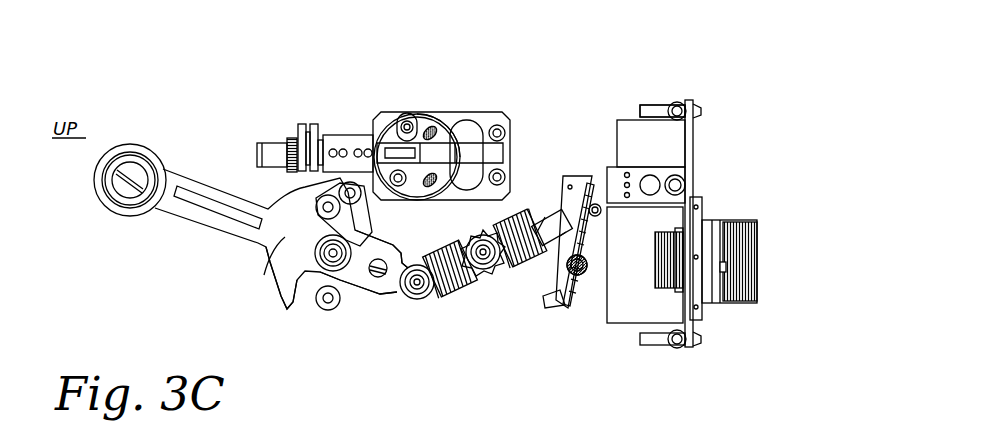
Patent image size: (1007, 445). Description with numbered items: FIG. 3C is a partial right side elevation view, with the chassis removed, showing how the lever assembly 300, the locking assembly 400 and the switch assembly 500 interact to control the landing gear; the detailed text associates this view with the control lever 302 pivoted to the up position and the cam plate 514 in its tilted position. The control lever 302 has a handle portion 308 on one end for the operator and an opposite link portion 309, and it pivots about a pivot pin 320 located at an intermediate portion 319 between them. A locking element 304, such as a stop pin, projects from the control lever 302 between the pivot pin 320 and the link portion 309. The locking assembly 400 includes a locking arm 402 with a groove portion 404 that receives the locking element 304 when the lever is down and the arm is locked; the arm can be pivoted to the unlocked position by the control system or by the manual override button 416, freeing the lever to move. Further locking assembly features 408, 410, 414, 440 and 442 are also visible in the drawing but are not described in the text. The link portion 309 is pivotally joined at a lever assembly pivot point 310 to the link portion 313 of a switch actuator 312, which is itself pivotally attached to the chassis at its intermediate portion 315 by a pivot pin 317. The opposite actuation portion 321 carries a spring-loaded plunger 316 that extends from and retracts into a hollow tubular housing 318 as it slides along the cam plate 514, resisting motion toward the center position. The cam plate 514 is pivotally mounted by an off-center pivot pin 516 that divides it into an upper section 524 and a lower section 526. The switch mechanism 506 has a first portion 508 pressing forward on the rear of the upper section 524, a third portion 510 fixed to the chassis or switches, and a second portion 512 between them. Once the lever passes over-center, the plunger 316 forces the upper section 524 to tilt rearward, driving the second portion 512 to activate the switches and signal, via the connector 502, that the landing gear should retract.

The lever assembly 300 is at (317, 274).
The control lever 302 is at (167, 210).
The locking element 304 is at (383, 300).
The handle portion 308 is at (105, 204).
The link portion 309 is at (412, 316).
The lever assembly pivot point 310 is at (420, 299).
The switch actuator 312 is at (500, 273).
The link portion 313 is at (405, 229).
The intermediate portion 315 is at (478, 292).
The spring-loaded plunger 316 is at (588, 262).
The pivot pin 317 is at (453, 298).
The hollow tubular housing 318 is at (527, 260).
The intermediate portion 319 is at (265, 277).
The pivot pin 320 is at (320, 270).
The actuation portion 321 is at (543, 210).
The locking assembly 400 is at (376, 139).
The locking arm 402 is at (378, 278).
The groove portion 404 is at (330, 302).
The bolt 408 is at (403, 122).
The cam disc 410 is at (447, 117).
The link 414 is at (333, 180).
The manual override button 416 is at (266, 152).
The roller 440 is at (494, 126).
The slide bar 442 is at (417, 142).
The switch assembly 500 is at (670, 224).
The connector 502 is at (750, 223).
The switch mechanism 506 is at (588, 162).
The first portion 508 is at (601, 213).
The third portion 510 is at (597, 194).
The second portion 512 is at (633, 175).
The cam plate 514 is at (563, 309).
The pivot pin 516 is at (587, 271).
The upper section 524 is at (570, 171).
The lower section 526 is at (586, 308).